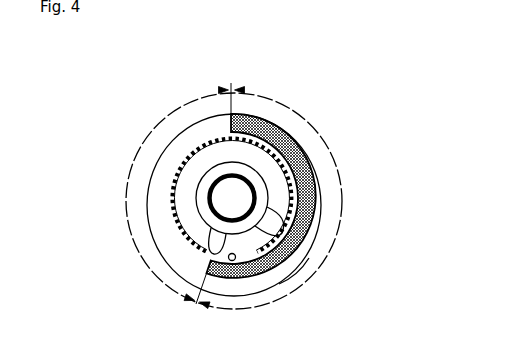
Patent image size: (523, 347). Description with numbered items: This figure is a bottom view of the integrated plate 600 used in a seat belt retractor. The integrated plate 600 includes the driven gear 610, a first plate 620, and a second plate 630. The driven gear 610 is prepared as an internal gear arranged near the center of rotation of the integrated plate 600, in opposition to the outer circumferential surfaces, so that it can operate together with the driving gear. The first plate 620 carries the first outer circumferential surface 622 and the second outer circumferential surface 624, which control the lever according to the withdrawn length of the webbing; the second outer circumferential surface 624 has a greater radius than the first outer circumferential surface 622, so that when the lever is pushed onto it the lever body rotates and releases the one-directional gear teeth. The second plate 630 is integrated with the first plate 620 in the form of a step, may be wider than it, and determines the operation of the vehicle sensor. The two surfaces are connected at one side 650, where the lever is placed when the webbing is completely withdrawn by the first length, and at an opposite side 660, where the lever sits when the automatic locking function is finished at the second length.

The integrated plate 600 is at (82, 74).
The driven gear 610 is at (315, 187).
The first plate 620 is at (272, 124).
The first outer circumferential surface 622 is at (127, 199).
The second outer circumferential surface 624 is at (268, 295).
The second plate 630 is at (150, 224).
The one side 650 is at (228, 107).
The opposite side 660 is at (207, 271).